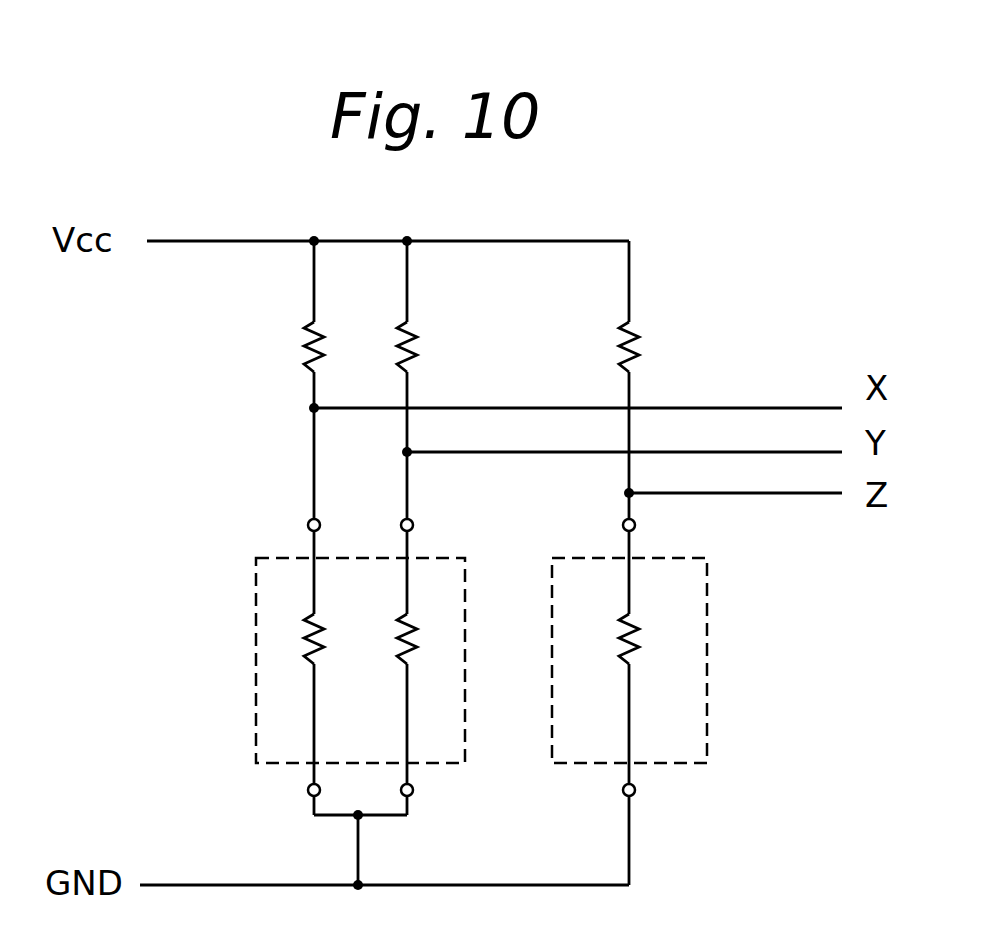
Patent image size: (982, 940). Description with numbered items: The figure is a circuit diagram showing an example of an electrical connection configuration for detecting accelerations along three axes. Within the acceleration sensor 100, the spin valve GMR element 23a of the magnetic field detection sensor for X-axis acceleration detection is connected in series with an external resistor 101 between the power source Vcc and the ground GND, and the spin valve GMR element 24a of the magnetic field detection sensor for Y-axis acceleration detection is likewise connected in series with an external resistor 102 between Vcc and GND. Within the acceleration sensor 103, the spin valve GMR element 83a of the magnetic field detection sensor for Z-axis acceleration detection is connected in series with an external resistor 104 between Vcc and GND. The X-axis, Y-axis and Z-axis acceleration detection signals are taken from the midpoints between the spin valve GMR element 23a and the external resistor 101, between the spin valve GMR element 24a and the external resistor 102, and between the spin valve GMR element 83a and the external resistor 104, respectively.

The external resistor 101 is at (306, 341).
The external resistor 102 is at (415, 336).
The external resistor 104 is at (636, 349).
The acceleration sensor 100 is at (256, 578).
The acceleration sensor 103 is at (707, 597).
The spin valve GMR element 23a is at (314, 650).
The spin valve GMR element 24a is at (409, 655).
The spin valve GMR element 83a is at (633, 656).